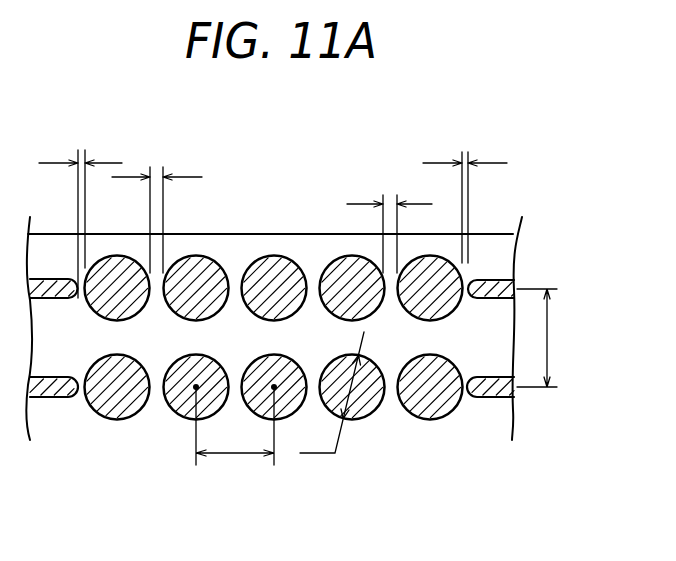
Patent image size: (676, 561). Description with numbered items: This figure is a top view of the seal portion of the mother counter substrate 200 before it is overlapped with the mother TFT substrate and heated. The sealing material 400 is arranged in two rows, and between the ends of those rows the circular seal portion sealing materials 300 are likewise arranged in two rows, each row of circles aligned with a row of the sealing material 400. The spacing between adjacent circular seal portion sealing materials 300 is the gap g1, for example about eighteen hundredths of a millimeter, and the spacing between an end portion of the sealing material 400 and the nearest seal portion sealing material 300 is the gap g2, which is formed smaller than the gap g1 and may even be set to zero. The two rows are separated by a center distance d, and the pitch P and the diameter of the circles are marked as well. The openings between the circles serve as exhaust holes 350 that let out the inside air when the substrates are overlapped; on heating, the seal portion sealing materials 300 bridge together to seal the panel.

The mother counter substrate 200 is at (330, 233).
The seal portion sealing material 300 is at (282, 254).
The exhaust hole 350 is at (237, 278).
The sealing material 400 is at (489, 277).
The gap between the seal portion sealing materials g1 is at (272, 206).
The gap between end portion of sealing material and seal portion sealing material g2 is at (273, 210).
The center distance d is at (542, 338).
The pitch P is at (235, 424).